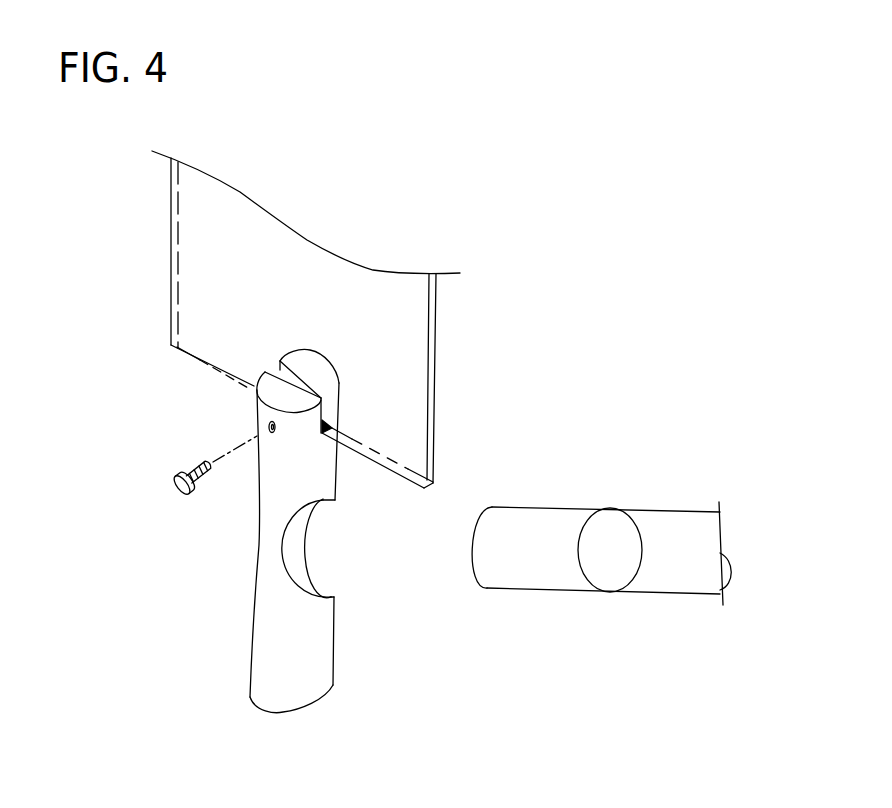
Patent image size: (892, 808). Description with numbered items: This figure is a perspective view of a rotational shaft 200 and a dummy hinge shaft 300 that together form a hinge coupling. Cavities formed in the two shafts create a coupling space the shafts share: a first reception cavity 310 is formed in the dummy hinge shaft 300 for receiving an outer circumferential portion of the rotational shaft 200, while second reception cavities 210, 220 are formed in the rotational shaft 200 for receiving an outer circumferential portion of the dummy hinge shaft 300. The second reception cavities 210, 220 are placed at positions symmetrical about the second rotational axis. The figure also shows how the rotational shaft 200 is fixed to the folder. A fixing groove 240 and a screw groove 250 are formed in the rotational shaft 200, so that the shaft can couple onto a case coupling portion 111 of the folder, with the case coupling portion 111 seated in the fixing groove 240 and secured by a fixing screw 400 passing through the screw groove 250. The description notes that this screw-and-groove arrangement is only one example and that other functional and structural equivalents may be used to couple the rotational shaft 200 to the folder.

The case coupling portion 111 is at (314, 272).
The rotational shaft 200 is at (342, 530).
The second reception cavity 210 is at (260, 547).
The second reception cavity 220 is at (303, 547).
The fixing groove 240 is at (327, 407).
The screw groove 250 is at (268, 426).
The dummy hinge shaft 300 is at (601, 525).
The first reception cavity 310 is at (611, 520).
The fixing screw 400 is at (188, 470).